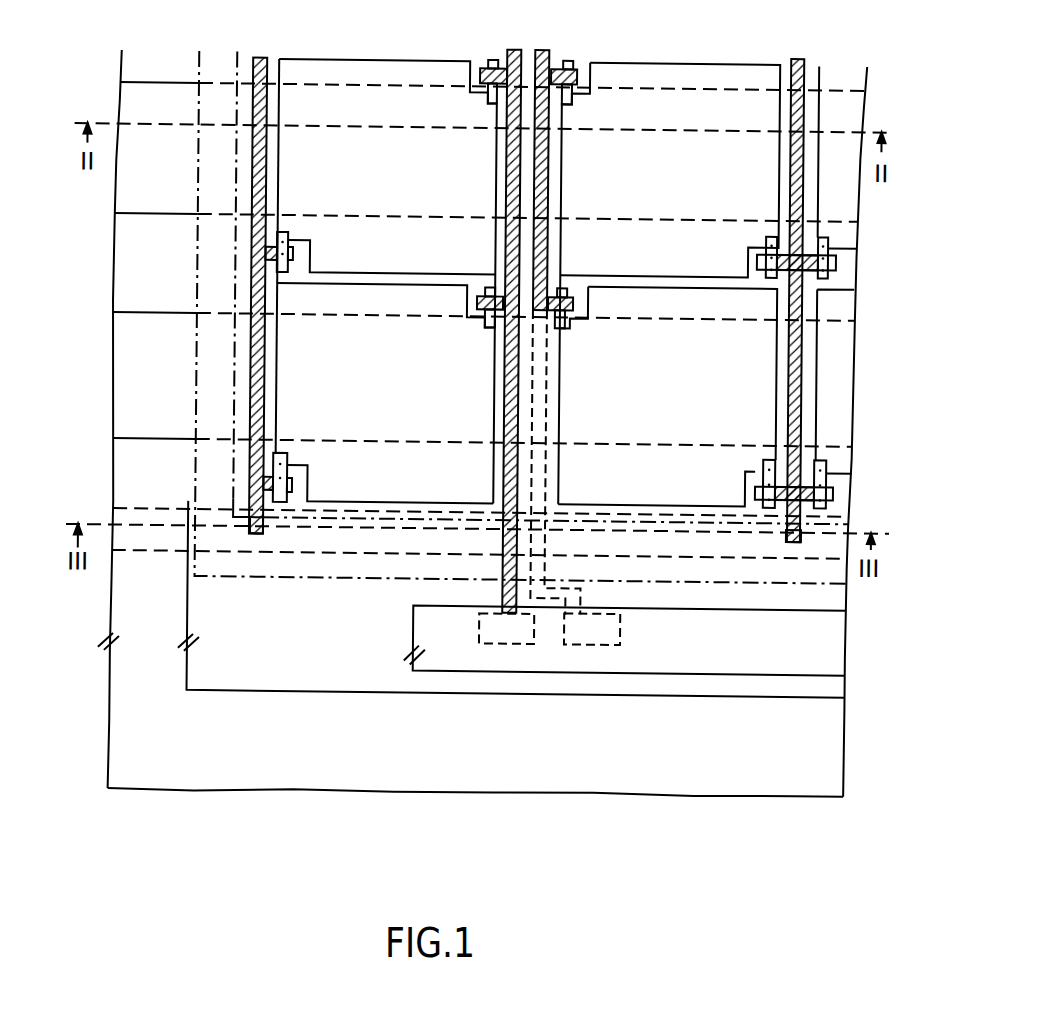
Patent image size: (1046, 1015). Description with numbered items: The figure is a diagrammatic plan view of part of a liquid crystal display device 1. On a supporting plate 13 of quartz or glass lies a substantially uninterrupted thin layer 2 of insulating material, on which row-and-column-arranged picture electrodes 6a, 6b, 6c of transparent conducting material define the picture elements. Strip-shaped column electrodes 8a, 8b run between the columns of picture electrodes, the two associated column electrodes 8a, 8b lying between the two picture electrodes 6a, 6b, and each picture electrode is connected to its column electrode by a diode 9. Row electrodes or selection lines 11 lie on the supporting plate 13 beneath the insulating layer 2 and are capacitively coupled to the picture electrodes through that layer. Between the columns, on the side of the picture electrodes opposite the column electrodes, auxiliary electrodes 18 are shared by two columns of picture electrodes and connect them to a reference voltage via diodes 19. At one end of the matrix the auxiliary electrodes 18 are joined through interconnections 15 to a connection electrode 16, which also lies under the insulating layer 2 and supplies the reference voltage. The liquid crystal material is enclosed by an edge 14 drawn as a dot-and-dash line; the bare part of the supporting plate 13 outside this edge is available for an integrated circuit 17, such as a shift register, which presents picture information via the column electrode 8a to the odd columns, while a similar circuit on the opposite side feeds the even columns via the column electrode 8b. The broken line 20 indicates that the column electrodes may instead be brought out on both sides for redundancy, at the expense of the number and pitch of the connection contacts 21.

The liquid crystal display device 1 is at (176, 850).
The thin layer of insulating material 2 is at (278, 691).
The picture electrode 6a is at (365, 55).
The picture electrode 6b is at (673, 53).
The picture electrode 6c is at (846, 57).
The column electrode 8a is at (519, 45).
The column electrode 8b is at (541, 45).
The diode 9 is at (490, 55).
The row electrodes or selection lines 11 is at (133, 215).
The supporting plate 13 is at (219, 777).
The edge 14 is at (377, 577).
The interconnection 15 is at (262, 530).
The connection electrode 16 is at (154, 550).
The integrated circuit 17 is at (838, 633).
The auxiliary electrode 18 is at (261, 54).
The diode 19 is at (291, 233).
The broken line 20 is at (551, 467).
The connection contact 21 is at (583, 630).